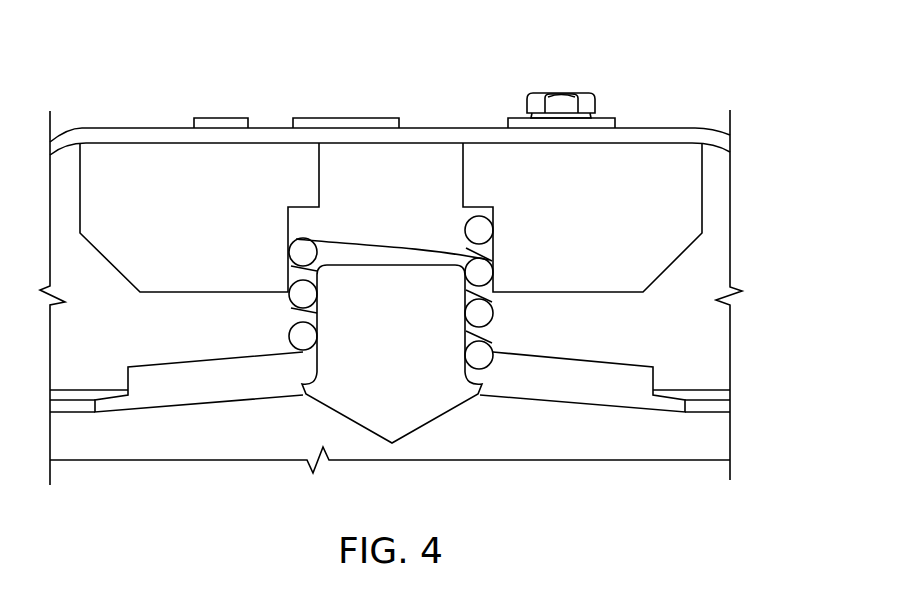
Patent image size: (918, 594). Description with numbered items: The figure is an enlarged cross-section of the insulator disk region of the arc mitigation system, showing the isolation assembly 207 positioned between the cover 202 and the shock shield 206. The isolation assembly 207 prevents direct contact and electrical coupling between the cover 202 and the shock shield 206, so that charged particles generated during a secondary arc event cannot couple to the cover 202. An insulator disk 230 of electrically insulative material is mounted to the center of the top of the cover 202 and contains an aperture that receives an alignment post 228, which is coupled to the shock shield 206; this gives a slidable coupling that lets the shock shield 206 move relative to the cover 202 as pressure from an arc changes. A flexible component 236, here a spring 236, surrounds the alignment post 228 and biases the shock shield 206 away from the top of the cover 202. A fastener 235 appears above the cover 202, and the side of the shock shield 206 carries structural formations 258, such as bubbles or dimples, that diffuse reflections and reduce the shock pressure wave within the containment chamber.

The cover 202 is at (706, 127).
The shock shield 206 is at (709, 398).
The isolation assembly 207 is at (712, 259).
The alignment post 228 is at (413, 307).
The insulator disk 230 is at (140, 182).
The nut 235 is at (558, 93).
The flexible component 236 is at (290, 285).
The structural formations 258 is at (607, 385).